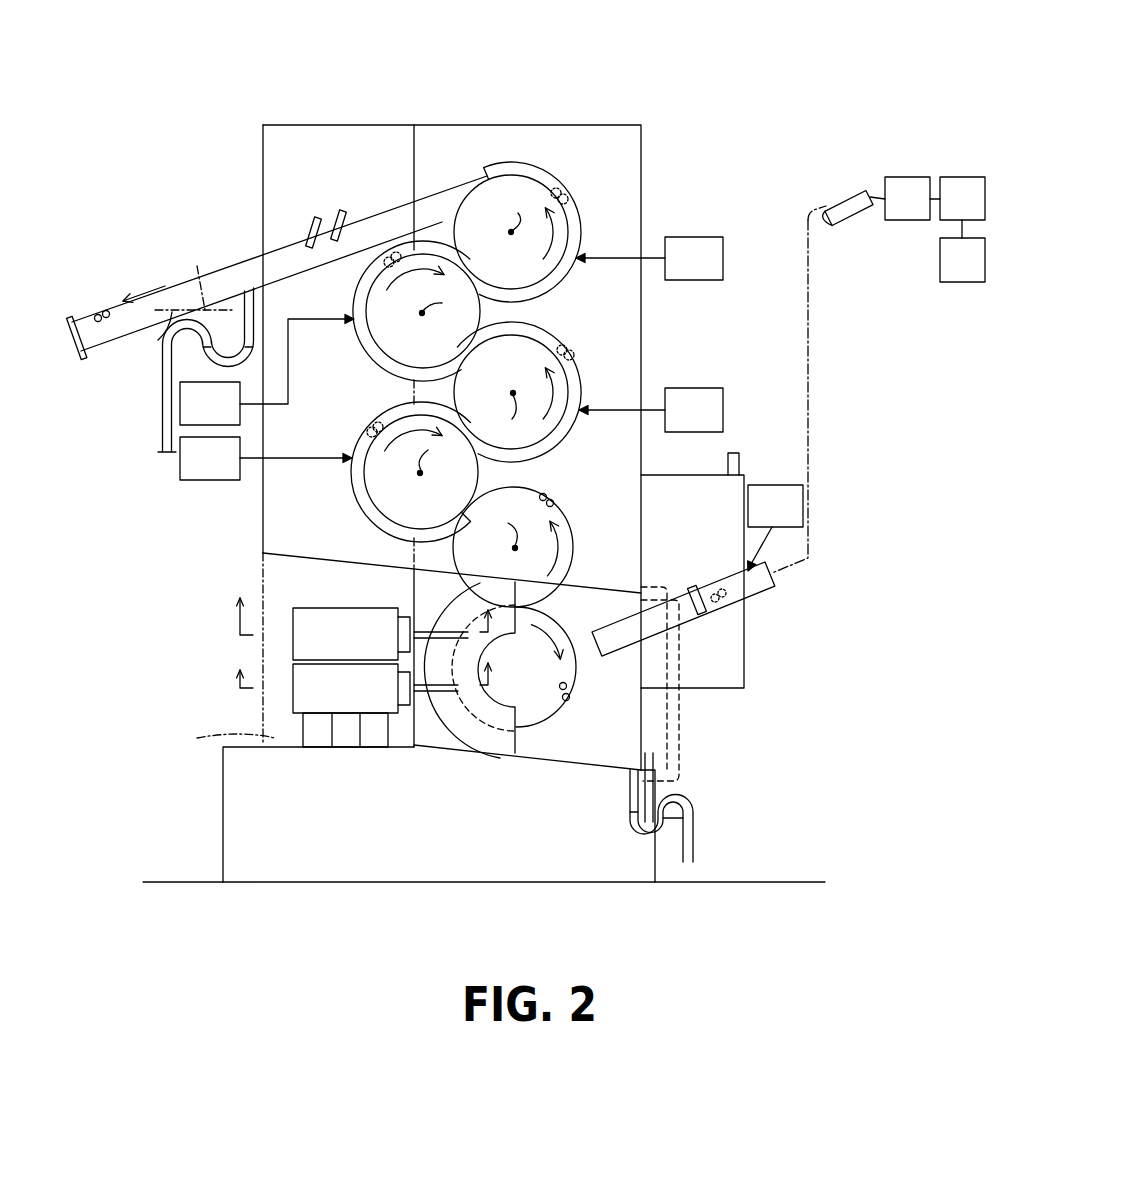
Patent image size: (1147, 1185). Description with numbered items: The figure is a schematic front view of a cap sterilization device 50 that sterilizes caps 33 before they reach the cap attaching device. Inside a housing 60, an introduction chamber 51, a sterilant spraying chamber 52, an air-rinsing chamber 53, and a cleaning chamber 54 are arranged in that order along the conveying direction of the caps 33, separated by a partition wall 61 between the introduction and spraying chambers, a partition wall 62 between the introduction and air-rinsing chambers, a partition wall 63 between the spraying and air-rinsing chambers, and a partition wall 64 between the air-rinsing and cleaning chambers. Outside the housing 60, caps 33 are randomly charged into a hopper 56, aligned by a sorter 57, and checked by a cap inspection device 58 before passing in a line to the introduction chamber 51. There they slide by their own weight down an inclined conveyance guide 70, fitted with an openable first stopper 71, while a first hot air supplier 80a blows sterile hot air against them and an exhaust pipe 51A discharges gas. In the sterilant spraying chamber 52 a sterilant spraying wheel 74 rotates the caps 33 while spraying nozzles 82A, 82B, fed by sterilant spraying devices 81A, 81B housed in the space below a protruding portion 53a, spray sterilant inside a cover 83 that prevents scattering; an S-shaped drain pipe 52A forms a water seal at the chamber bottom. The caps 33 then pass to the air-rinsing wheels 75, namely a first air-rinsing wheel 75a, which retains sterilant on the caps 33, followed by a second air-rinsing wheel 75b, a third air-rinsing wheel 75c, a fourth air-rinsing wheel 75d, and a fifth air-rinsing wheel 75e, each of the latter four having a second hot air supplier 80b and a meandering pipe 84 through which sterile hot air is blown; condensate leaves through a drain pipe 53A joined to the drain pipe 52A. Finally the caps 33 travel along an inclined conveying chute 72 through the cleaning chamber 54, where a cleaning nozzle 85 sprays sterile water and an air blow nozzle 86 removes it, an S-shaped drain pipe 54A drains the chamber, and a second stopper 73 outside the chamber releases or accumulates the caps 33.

The cap sterilization device 50 is at (673, 60).
The introduction chamber 51 is at (702, 520).
The exhaust pipe 51A is at (743, 455).
The sterilant spraying chamber 52 is at (583, 748).
The drain pipe 52A is at (692, 830).
The air-rinsing chamber 53 is at (623, 168).
The protruding portion 53a is at (263, 553).
The drain pipe 53A is at (673, 718).
The cleaning chamber 54 is at (367, 168).
The drain pipe 54A is at (162, 440).
The hopper 56 is at (962, 251).
The sorter 57 is at (957, 198).
The cap inspection device 58 is at (851, 375).
The housing 60 is at (643, 222).
The partition wall 61 is at (645, 678).
The partition wall 62 is at (642, 490).
The partition wall 63 is at (638, 588).
The partition wall 64 is at (415, 163).
The conveyance guide 70 is at (752, 590).
The first stopper 71 is at (702, 614).
The conveying chute 72 is at (183, 285).
The second stopper 73 is at (76, 312).
The sterilant spraying wheel 74 is at (550, 685).
The air-rinsing wheels 75 is at (466, 384).
The first air-rinsing wheel 75a is at (502, 546).
The second air-rinsing wheel 75b is at (462, 500).
The third air-rinsing wheel 75c is at (548, 386).
The fourth air-rinsing wheel 75d is at (457, 343).
The fifth air-rinsing wheel 75e is at (495, 229).
The first hot air supplier 80a is at (775, 528).
The second hot air supplier 80b is at (451, 358).
The sterilant spraying device 81A is at (300, 702).
The sterilant spraying device 81B is at (300, 643).
The spraying nozzle 82A is at (424, 692).
The spraying nozzle 82B is at (455, 641).
The cover 83 is at (507, 745).
The pipe 84 is at (353, 492).
The cleaning nozzle 85 is at (342, 213).
The air blow nozzle 86 is at (316, 220).
The caps 33 is at (102, 314).